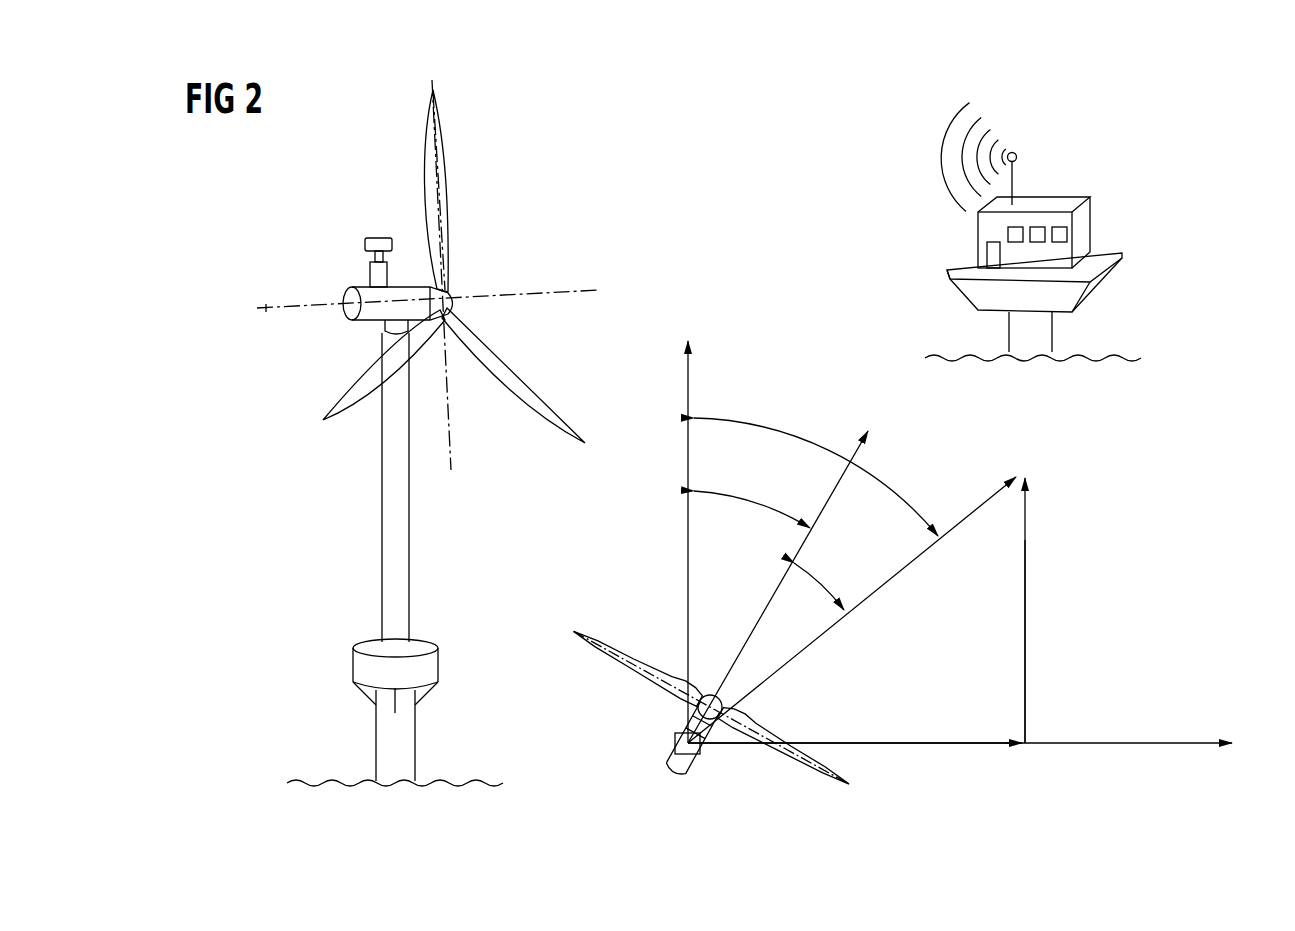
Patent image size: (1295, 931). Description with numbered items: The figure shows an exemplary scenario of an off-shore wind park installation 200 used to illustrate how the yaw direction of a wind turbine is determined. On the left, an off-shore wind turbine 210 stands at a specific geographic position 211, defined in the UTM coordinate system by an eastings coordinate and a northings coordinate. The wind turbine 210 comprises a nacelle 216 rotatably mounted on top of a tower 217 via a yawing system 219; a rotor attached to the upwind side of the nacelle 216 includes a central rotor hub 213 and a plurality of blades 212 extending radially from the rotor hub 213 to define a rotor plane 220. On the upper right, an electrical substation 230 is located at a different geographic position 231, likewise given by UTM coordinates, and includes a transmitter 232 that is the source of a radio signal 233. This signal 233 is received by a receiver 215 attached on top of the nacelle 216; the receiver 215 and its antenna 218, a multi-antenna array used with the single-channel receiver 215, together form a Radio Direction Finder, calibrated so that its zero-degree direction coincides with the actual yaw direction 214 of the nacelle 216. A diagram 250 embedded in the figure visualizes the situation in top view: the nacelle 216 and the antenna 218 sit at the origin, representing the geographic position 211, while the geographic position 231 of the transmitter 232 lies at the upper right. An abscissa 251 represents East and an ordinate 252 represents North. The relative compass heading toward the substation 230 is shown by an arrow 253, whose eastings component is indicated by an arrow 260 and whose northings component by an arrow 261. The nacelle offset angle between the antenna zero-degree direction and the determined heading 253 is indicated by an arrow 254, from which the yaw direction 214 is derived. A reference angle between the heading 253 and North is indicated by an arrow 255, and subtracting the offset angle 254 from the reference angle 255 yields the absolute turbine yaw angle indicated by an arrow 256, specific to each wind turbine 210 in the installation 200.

The off-shore wind park installation 200 is at (1040, 232).
The off-shore wind turbine 210 is at (419, 433).
The geographic position 211 is at (230, 632).
The blades 212 is at (522, 395).
The rotor hub 213 is at (452, 296).
The yaw direction 214 is at (568, 290).
The receiver 215 is at (370, 272).
The nacelle 216 is at (345, 300).
The tower 217 is at (392, 548).
The antenna 218 is at (346, 237).
The yawing system 219 is at (385, 325).
The rotor plane 220 is at (433, 157).
The electrical substation 230 is at (1130, 251).
The geographic position 231 is at (1200, 102).
The transmitter 232 is at (1018, 157).
The radio signal 233 is at (940, 158).
The diagram 250 is at (903, 577).
The abscissa 251 is at (1122, 748).
The ordinate 252 is at (690, 365).
The relative compass heading 253 is at (915, 560).
The nacelle offset angle 254 is at (815, 593).
The reference angle 255 is at (818, 448).
The absolute turbine yaw angle 256 is at (753, 497).
The first coordinate 260 is at (935, 748).
The second coordinate 261 is at (1027, 538).